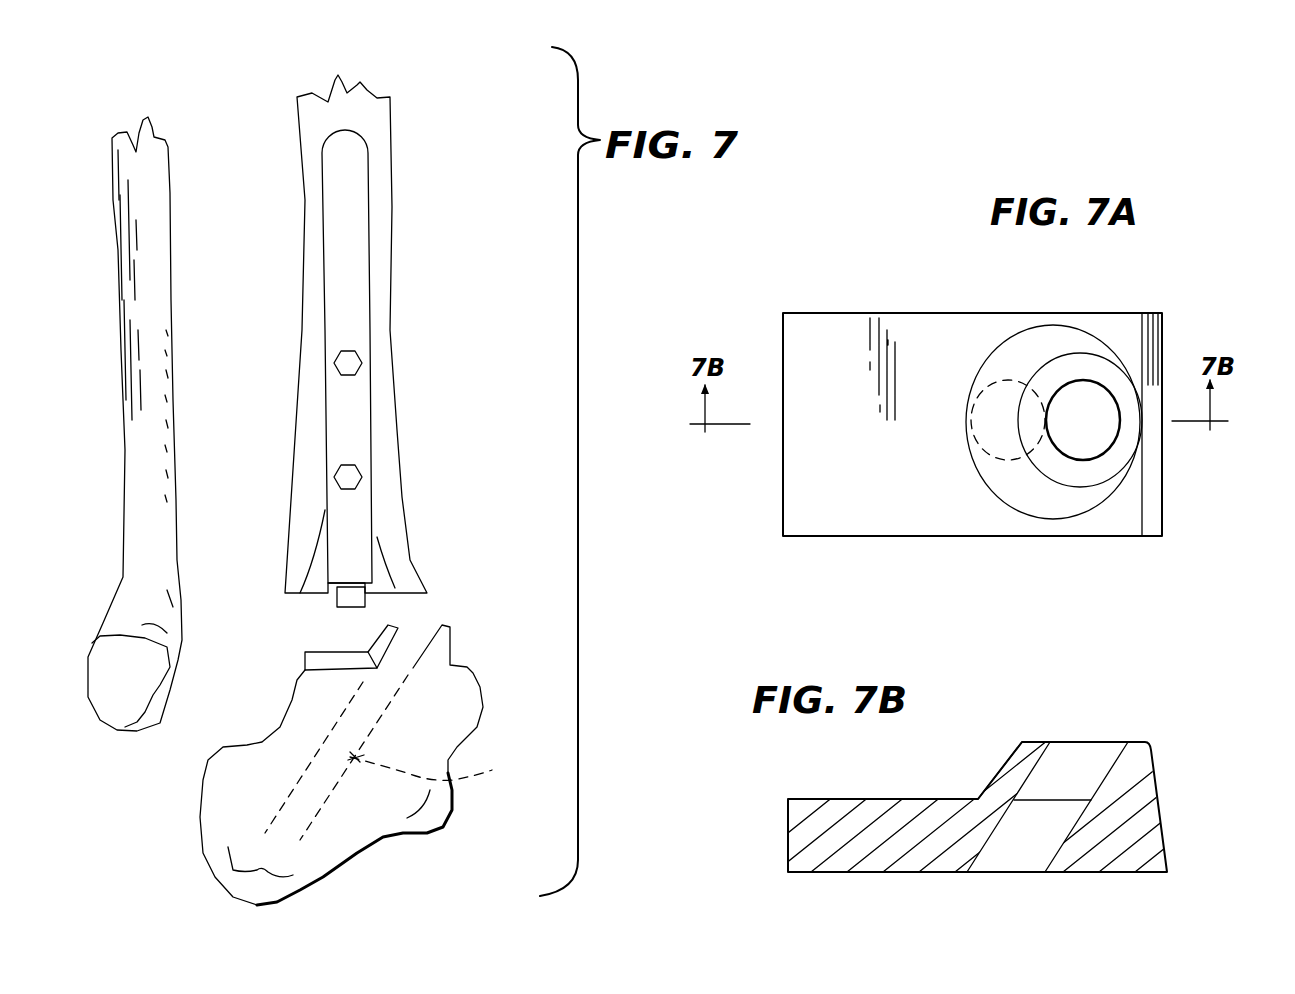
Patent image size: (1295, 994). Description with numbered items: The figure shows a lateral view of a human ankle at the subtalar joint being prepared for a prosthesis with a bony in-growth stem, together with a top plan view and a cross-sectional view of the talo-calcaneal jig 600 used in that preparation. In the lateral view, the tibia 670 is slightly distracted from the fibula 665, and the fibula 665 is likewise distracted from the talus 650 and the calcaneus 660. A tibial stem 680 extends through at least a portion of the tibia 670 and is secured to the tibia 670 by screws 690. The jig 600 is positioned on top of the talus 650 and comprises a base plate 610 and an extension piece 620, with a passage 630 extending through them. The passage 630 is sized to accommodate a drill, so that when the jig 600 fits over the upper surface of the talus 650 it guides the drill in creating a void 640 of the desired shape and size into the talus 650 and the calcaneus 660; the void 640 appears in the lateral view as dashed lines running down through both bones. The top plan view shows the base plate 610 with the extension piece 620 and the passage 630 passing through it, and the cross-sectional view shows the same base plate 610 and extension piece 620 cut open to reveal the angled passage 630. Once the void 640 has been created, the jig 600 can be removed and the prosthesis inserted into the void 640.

In FIG. 7, the talo-calcaneal jig 600 is at (390, 628).
In FIG. 7B, the talo-calcaneal jig 600 is at (1012, 742).
In FIG. 7, the base plate 610 is at (305, 660).
In FIG. 7A, the base plate 610 is at (847, 325).
In FIG. 7B, the base plate 610 is at (892, 813).
In FIG. 7, the extension piece 620 is at (383, 630).
In FIG. 7A, the extension piece 620 is at (1028, 343).
In FIG. 7B, the extension piece 620 is at (1033, 742).
In FIG. 7A, the passage 630 is at (1095, 415).
In FIG. 7B, the passage 630 is at (1070, 775).
In FIG. 7, the void 640 is at (492, 773).
In FIG. 7, the talus 650 is at (462, 697).
In FIG. 7, the calcaneus 660 is at (342, 843).
In FIG. 7, the fibula 665 is at (124, 526).
In FIG. 7, the tibia 670 is at (392, 258).
In FIG. 7, the tibial stem 680 is at (353, 310).
In FIG. 7, the screws 690 is at (355, 477).